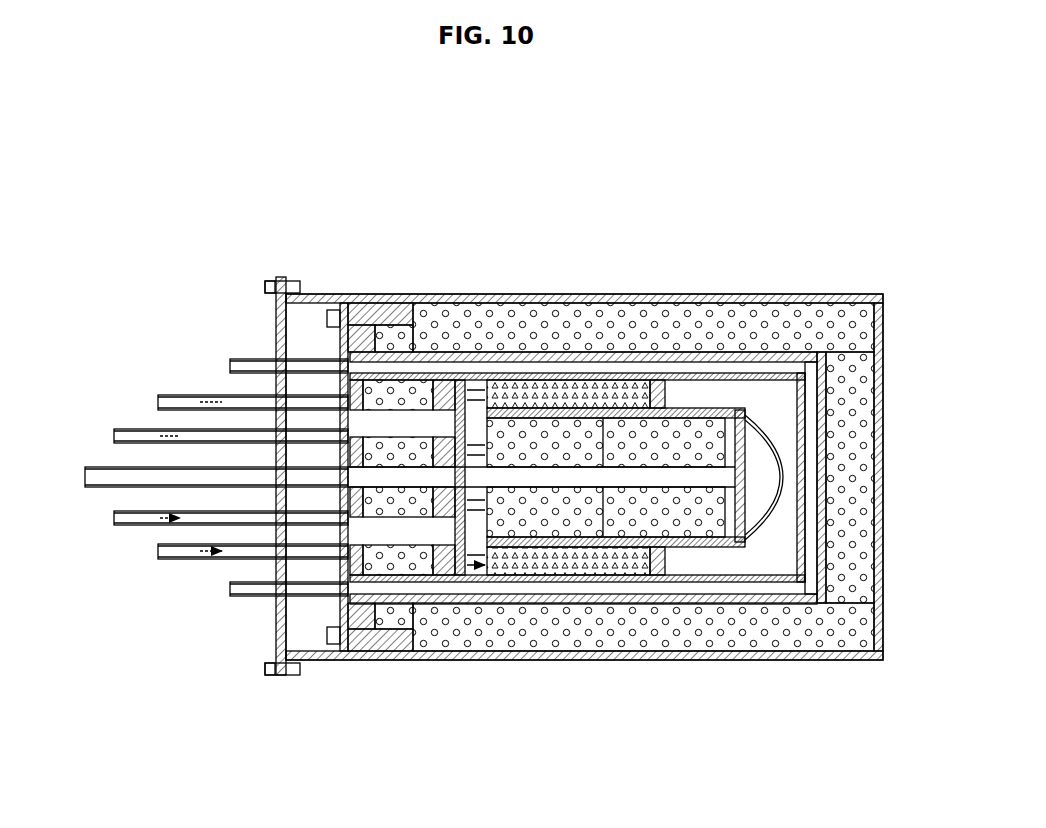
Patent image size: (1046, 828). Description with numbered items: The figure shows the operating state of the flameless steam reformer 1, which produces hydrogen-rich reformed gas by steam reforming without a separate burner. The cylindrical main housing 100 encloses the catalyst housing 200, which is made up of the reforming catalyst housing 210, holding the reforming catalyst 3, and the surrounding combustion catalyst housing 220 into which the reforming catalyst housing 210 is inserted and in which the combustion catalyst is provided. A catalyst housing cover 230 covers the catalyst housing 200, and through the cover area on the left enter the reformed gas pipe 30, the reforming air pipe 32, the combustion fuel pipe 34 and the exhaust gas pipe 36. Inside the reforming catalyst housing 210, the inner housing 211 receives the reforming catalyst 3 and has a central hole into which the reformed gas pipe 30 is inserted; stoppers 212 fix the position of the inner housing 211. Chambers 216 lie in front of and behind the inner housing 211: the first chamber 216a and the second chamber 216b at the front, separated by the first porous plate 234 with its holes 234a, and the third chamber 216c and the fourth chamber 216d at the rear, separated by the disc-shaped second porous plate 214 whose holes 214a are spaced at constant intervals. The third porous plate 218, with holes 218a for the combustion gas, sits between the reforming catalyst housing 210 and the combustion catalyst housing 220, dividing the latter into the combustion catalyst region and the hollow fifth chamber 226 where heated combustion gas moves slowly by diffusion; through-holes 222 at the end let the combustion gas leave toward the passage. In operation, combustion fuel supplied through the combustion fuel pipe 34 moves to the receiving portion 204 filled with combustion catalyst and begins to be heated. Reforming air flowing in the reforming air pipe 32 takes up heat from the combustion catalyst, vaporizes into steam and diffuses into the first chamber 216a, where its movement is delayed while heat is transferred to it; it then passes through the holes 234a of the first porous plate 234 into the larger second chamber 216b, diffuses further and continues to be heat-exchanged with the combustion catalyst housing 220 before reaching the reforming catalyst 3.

The flameless steam reformer 1 is at (878, 204).
The main housing 100 is at (886, 284).
The catalyst housing 200 is at (610, 228).
The reforming catalyst housing 210 is at (506, 400).
The inner housing 211 is at (460, 398).
The combustion catalyst housing 220 is at (572, 360).
The stoppers 212 is at (724, 420).
The second porous plate 214 is at (764, 410).
The holes 214a is at (806, 425).
The through-holes 222 is at (815, 395).
The fifth chamber 226 is at (783, 535).
The chambers 216 is at (630, 573).
The first chamber 216a is at (422, 580).
The second chamber 216b is at (535, 495).
The third chamber 216c is at (751, 559).
The fourth chamber 216d is at (760, 545).
The third porous plate 218 is at (647, 572).
The holes 218a is at (667, 560).
The reforming catalyst 3 is at (550, 515).
The catalyst housing cover 230 is at (388, 340).
The first porous plate 234 is at (420, 396).
The holes 234a is at (365, 392).
The receiving portion 204 is at (408, 568).
The reformed gas pipe 30 is at (97, 487).
The reforming air pipe 32 is at (114, 436).
The combustion fuel pipe 34 is at (158, 401).
The exhaust gas pipe 36 is at (230, 366).